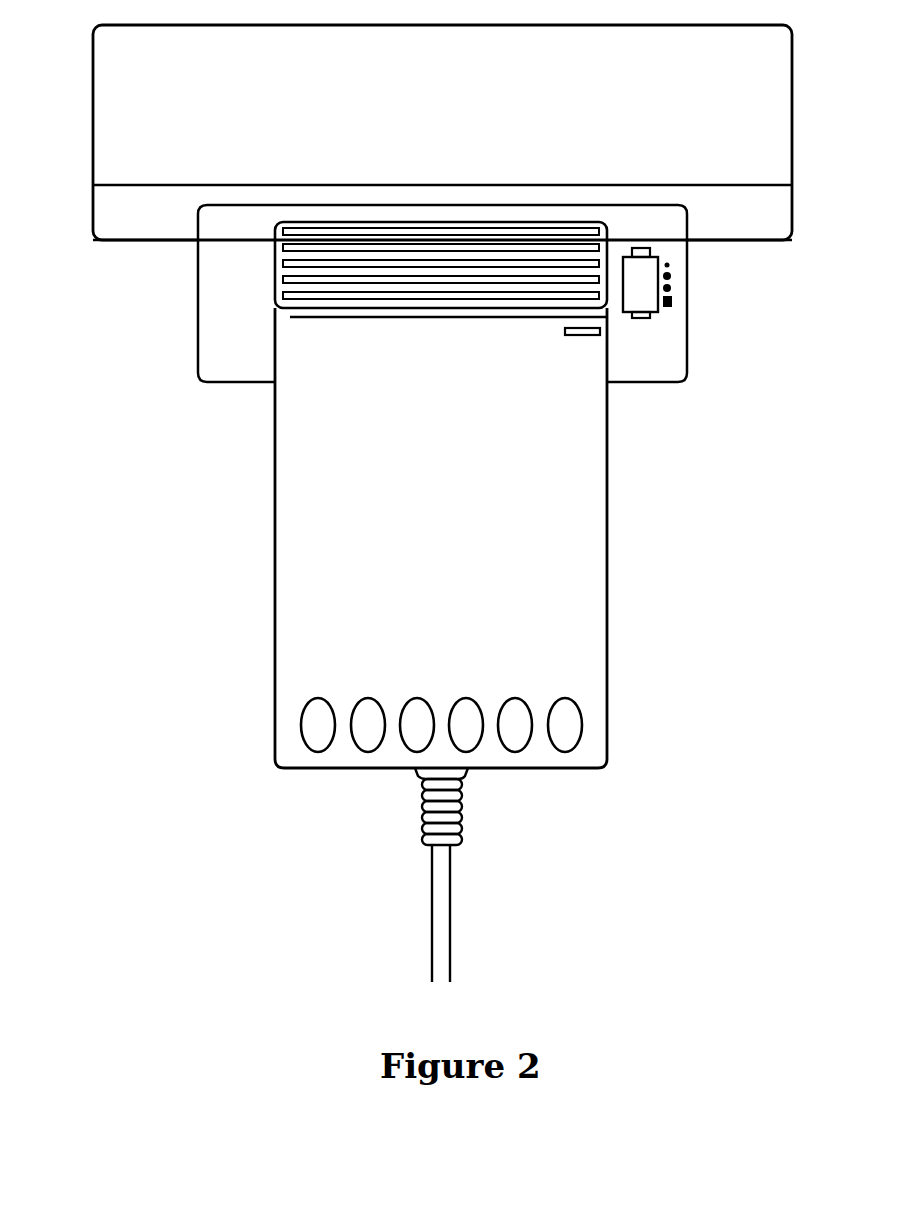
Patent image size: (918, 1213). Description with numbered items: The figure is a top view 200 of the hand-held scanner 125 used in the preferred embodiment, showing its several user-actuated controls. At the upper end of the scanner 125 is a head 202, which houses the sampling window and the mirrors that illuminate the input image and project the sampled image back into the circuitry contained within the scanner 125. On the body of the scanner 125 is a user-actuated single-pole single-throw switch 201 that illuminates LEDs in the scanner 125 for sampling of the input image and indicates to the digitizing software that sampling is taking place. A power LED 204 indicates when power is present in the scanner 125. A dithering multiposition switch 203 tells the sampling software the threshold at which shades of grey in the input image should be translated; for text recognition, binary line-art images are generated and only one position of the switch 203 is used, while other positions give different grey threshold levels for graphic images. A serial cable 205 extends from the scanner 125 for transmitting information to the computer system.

The top view 200 is at (752, 431).
The head 202 is at (93, 108).
The single-pole single-throw (SPST) switch 201 is at (275, 265).
The dithering multiposition switch 203 is at (673, 283).
The power LED 204 is at (564, 328).
The hand-held scanner 125 is at (275, 551).
The serial cable 205 is at (431, 889).